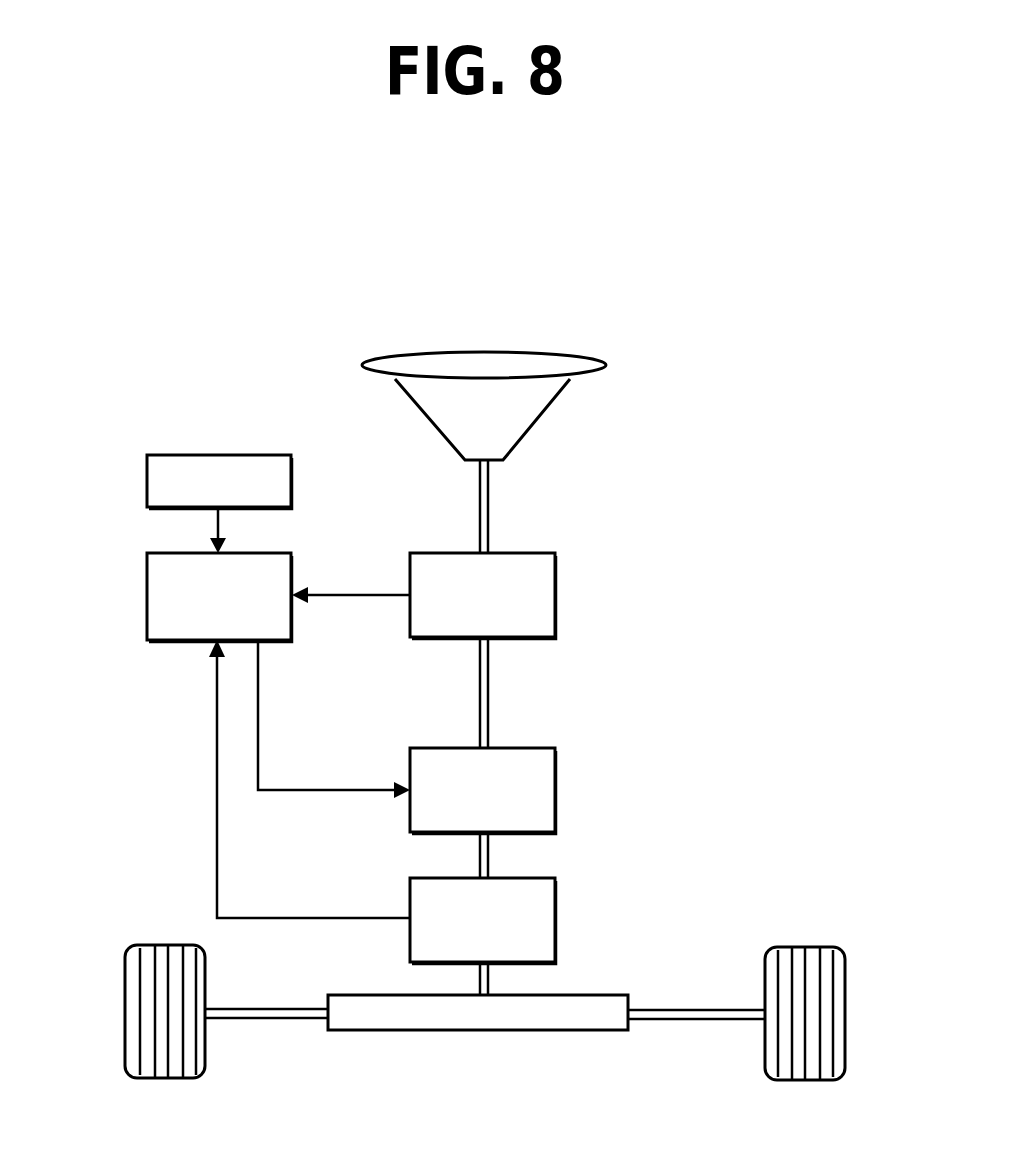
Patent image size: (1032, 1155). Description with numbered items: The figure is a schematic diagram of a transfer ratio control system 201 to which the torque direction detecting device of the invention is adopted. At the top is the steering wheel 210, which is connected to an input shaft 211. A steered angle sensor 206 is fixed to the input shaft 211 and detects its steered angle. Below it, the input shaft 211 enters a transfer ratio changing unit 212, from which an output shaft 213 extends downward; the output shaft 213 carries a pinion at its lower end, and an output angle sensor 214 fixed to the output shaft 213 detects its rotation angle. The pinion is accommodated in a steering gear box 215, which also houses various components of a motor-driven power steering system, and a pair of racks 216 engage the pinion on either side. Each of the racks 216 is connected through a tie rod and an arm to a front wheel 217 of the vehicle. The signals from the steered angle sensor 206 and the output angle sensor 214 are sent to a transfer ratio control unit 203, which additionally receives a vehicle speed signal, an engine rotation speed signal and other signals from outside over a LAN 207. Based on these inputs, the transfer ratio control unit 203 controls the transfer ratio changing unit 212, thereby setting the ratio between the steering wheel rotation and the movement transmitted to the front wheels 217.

The transfer ratio control system 201 is at (560, 243).
The steering wheel 210 is at (552, 362).
The input shaft 211 is at (488, 708).
The output shaft 213 is at (488, 851).
The steered angle sensor 206 is at (555, 593).
The transfer ratio changing unit 212 is at (555, 788).
The output angle sensor 214 is at (555, 917).
The LAN 207 is at (147, 483).
The transfer ratio control unit 203 is at (147, 594).
The steering gear box 215 is at (413, 1017).
The racks 216 is at (270, 1018).
The front wheel 217 is at (158, 945).